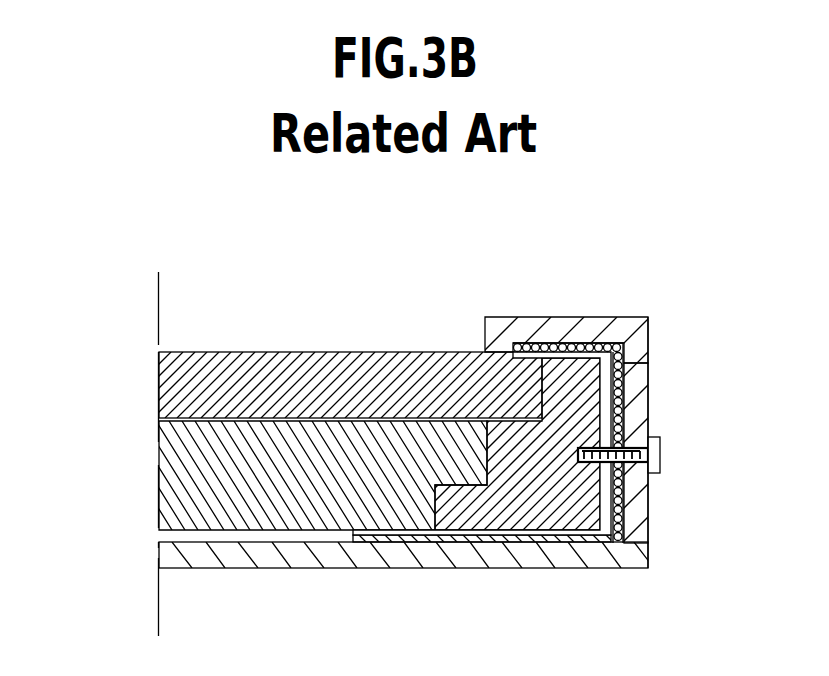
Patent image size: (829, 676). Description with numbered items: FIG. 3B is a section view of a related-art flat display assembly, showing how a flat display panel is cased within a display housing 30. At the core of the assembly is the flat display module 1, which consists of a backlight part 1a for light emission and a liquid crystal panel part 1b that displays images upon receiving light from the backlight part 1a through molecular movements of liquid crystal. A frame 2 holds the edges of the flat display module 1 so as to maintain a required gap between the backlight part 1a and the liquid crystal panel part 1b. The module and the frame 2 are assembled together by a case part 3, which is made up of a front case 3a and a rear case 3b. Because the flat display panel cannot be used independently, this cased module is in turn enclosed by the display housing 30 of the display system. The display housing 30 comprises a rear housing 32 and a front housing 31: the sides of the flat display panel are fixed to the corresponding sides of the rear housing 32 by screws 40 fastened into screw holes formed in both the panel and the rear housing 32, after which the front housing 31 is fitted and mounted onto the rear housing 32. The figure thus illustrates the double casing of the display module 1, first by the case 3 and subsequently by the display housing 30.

The flat display module 1 is at (321, 441).
The backlight part 1a is at (320, 475).
The liquid crystal panel part 1b is at (158, 380).
The frame 2 is at (555, 513).
The case part 3 is at (554, 449).
The front case 3a is at (620, 495).
The rear case 3b is at (613, 527).
The display housing 30 is at (544, 430).
The front housing 31 is at (648, 335).
The rear housing 32 is at (648, 388).
The screw 40 is at (660, 452).